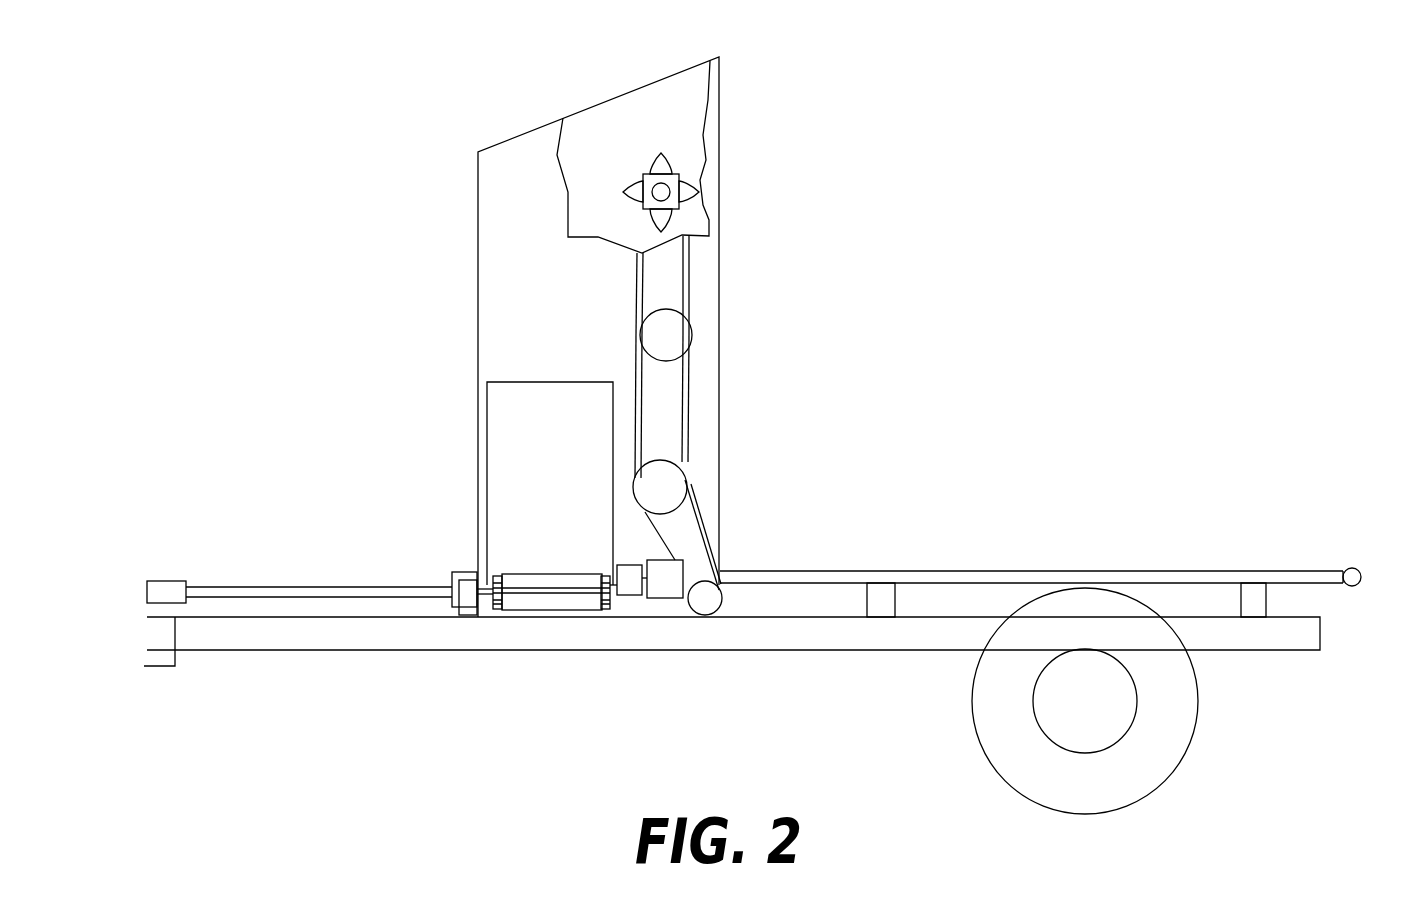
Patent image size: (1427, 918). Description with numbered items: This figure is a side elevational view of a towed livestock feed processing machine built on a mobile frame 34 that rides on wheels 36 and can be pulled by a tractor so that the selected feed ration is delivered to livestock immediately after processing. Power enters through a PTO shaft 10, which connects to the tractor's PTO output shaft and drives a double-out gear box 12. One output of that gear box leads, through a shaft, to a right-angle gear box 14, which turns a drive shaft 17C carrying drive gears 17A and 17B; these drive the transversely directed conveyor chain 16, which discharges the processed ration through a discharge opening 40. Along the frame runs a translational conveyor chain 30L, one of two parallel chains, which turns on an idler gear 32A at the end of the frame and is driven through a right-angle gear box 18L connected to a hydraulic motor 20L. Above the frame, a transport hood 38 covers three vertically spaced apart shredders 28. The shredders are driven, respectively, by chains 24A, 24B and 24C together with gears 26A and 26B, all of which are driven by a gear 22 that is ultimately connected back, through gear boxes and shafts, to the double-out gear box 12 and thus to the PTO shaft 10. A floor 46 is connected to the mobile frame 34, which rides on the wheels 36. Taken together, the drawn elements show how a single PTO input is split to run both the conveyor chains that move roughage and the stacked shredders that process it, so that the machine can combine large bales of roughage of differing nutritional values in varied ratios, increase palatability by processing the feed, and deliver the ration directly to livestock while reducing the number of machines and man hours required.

The PTO shaft 10 is at (312, 587).
The double-out gear box 12 is at (468, 572).
The right-angle gear box 14 is at (469, 608).
The translational conveyor system chain 16 is at (517, 574).
The drive gear 17A is at (497, 610).
The drive gear 17B is at (603, 610).
The drive shaft 17C is at (547, 600).
The right-angle gear box 18L is at (630, 597).
The hydraulic motor 20L is at (665, 598).
The gear 22 is at (713, 600).
The chain 24A is at (690, 273).
The chain 24B is at (690, 410).
The chain 24C is at (703, 538).
The gear 26A is at (673, 337).
The gear 26B is at (668, 488).
The shredder 28 is at (693, 176).
The translational conveyor chain 30L is at (932, 571).
The idler gear 32A is at (1352, 568).
The mobile frame 34 is at (888, 650).
The wheel 36 is at (1198, 717).
The transport hood 38 is at (478, 223).
The discharge opening 40 is at (502, 406).
The floor 46 is at (1328, 577).